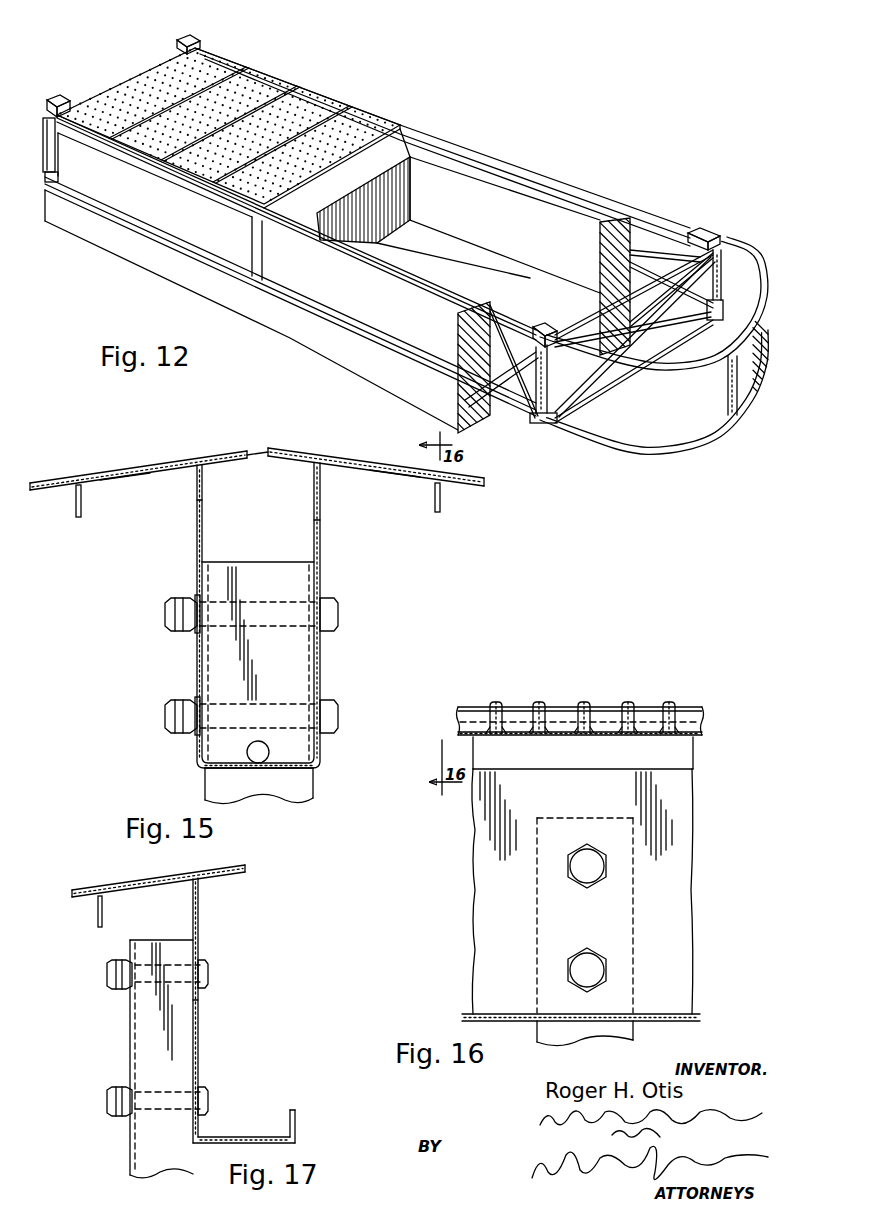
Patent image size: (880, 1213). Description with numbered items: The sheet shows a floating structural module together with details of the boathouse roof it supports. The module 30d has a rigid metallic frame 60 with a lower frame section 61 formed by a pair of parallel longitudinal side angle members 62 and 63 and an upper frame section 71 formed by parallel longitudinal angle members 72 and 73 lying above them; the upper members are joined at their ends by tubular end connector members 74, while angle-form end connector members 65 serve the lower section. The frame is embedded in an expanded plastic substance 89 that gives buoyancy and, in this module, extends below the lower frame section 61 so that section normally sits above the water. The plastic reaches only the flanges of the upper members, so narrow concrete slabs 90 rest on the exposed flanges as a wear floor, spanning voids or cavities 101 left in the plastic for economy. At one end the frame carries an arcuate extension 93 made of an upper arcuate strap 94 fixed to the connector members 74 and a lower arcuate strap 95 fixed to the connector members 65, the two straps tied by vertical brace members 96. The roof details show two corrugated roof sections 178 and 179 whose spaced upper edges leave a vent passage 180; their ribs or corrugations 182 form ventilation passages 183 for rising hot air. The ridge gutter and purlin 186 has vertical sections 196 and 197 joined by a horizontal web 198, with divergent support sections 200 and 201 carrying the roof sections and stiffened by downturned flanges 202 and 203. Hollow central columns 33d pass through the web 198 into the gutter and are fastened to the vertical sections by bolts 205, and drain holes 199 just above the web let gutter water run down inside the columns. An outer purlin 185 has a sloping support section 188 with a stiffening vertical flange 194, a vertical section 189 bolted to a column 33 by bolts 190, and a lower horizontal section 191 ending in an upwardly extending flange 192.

In FIG. 12, the module 30d is at (372, 50).
In FIG. 12, the concrete slabs 90 is at (357, 113).
In FIG. 12, the end connector members 74 is at (202, 40).
In FIG. 12, the frame 60 is at (574, 180).
In FIG. 12, the longitudinal angle member 73 is at (468, 146).
In FIG. 12, the upper frame section 71 is at (506, 160).
In FIG. 12, the voids or cavities 101 is at (549, 236).
In FIG. 12, the longitudinal angle member 72 is at (380, 266).
In FIG. 12, the lower frame section 61 is at (120, 212).
In FIG. 12, the longitudinal side angle member 62 is at (378, 336).
In FIG. 12, the expanded plastic substance 89 is at (272, 322).
In FIG. 12, the end connector members 65 is at (724, 312).
In FIG. 12, the longitudinal side angle member 63 is at (683, 300).
In FIG. 12, the upper arcuate strap 94 is at (765, 256).
In FIG. 12, the lower arcuate strap 95 is at (590, 448).
In FIG. 12, the arcuate extension 93 is at (662, 460).
In FIG. 12, the vertical brace members 96 is at (726, 428).
In FIG. 15, the roof section 178 is at (122, 475).
In FIG. 15, the roof section 179 is at (352, 468).
In FIG. 15, the vent passage 180 is at (256, 460).
In FIG. 15, the support section 200 is at (130, 481).
In FIG. 15, the support section 201 is at (388, 480).
In FIG. 15, the flange 202 is at (75, 510).
In FIG. 15, the flange 203 is at (442, 505).
In FIG. 15, the ridge gutter and purlin 186 is at (323, 572).
In FIG. 15, the vertical section 196 is at (196, 526).
In FIG. 15, the vertical section 197 is at (322, 518).
In FIG. 15, the horizontal web 198 is at (318, 770).
In FIG. 15, the central columns 33d is at (300, 792).
In FIG. 16, the central columns 33d is at (698, 1038).
In FIG. 15, the bolts 205 is at (338, 614).
In FIG. 15, the drain holes 199 is at (262, 752).
In FIG. 16, the ventilation passages 183 is at (626, 737).
In FIG. 16, the ribs or corrugations 182 is at (588, 702).
In FIG. 17, the support section 188 is at (162, 885).
In FIG. 17, the vertical flange 194 is at (98, 912).
In FIG. 17, the vertical section 189 is at (199, 912).
In FIG. 17, the lower horizontal section 191 is at (243, 1122).
In FIG. 17, the upwardly extending flange 192 is at (296, 1117).
In FIG. 17, the purlin 185 is at (199, 1032).
In FIG. 17, the column 33 is at (143, 1128).
In FIG. 17, the bolts 190 is at (213, 969).